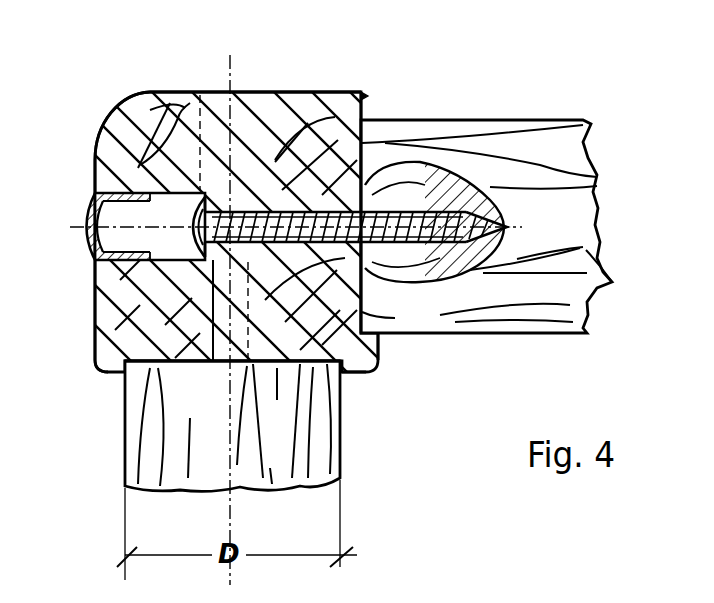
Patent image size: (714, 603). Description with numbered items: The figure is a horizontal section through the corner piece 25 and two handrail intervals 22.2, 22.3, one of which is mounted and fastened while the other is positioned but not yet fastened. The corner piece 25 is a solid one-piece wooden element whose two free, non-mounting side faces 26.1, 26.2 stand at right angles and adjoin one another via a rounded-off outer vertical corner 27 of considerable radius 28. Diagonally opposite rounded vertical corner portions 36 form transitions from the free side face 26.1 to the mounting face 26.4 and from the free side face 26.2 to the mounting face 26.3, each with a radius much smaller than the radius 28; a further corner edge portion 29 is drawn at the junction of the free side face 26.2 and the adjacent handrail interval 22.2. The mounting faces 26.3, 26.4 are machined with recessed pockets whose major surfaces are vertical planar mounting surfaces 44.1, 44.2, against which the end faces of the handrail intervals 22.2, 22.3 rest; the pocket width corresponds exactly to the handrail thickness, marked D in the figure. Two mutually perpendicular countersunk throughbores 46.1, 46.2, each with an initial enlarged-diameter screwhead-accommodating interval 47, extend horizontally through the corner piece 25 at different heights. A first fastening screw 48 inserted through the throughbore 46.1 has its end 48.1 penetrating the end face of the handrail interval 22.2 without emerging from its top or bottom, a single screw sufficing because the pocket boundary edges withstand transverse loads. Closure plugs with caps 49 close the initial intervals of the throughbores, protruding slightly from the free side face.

The handrail interval 22.2 is at (440, 130).
The handrail interval 22.3 is at (134, 416).
The corner piece 25 is at (183, 90).
The free side face 26.1 is at (95, 311).
The free side face 26.2 is at (330, 91).
The mounting face 26.3 is at (379, 341).
The mounting face 26.4 is at (354, 375).
The outer vertical corner 27 is at (131, 96).
The radius 28 is at (119, 128).
The corner edge 29 is at (363, 90).
The rounded vertical corner portion 36 is at (364, 94).
The mounting surface 44.1 is at (367, 317).
The mounting surface 44.2 is at (184, 364).
The countersunk throughbore 46.1 is at (440, 184).
The countersunk throughbore 46.2 is at (223, 308).
The screwhead-accommodating interval 47 is at (190, 258).
The first fastening screw 48 is at (357, 241).
The screw end 48.1 is at (494, 226).
The cap 49 is at (82, 240).